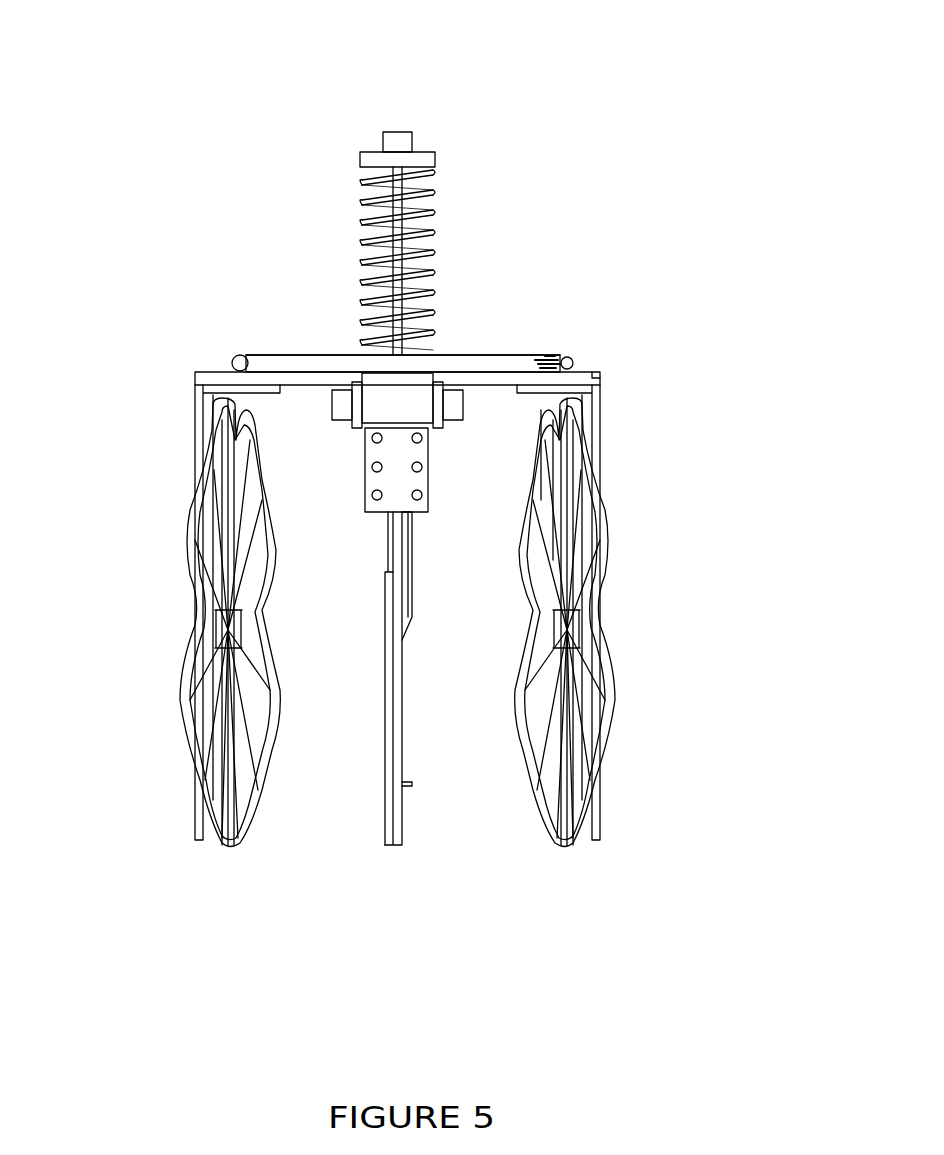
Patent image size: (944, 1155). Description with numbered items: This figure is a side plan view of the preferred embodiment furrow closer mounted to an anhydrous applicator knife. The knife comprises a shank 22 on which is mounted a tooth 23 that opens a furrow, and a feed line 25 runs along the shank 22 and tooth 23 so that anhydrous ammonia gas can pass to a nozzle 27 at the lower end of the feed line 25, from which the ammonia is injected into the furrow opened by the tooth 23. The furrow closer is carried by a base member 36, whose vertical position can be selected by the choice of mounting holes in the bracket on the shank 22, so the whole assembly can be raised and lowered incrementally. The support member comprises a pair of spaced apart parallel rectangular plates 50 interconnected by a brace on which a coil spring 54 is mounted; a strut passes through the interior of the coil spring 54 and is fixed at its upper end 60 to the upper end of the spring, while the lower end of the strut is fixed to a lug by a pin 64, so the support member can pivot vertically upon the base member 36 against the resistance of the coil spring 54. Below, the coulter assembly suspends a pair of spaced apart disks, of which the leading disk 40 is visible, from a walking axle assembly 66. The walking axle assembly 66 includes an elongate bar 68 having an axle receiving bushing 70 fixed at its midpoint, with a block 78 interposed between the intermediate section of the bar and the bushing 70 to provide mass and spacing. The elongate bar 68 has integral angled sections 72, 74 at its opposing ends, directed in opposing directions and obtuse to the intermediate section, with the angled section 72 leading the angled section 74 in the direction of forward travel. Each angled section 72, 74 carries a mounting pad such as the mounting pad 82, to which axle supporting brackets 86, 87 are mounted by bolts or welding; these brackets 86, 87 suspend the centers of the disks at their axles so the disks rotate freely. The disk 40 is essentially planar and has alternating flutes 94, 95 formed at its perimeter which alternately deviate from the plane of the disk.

The shank 22 is at (410, 618).
The tooth 23 is at (390, 825).
The feed line 25 is at (405, 708).
The nozzle 27 is at (406, 828).
The base member 36 is at (365, 505).
The disk 40 is at (597, 800).
The rectangular plate 50 is at (440, 423).
The coil spring 54 is at (435, 205).
The upper end of strut 60 is at (400, 140).
The pin 64 is at (577, 355).
The walking axle assembly 66 is at (470, 355).
The elongate bar 68 is at (340, 362).
The axle receiving bushing 70 is at (378, 410).
The angled section 72 is at (570, 355).
The angled section 74 is at (240, 362).
The block 78 is at (420, 375).
The mounting pad 82 is at (602, 372).
The axle supporting bracket 86 is at (600, 452).
The axle supporting bracket 87 is at (197, 455).
The flute 94 is at (530, 570).
The flute 95 is at (530, 512).